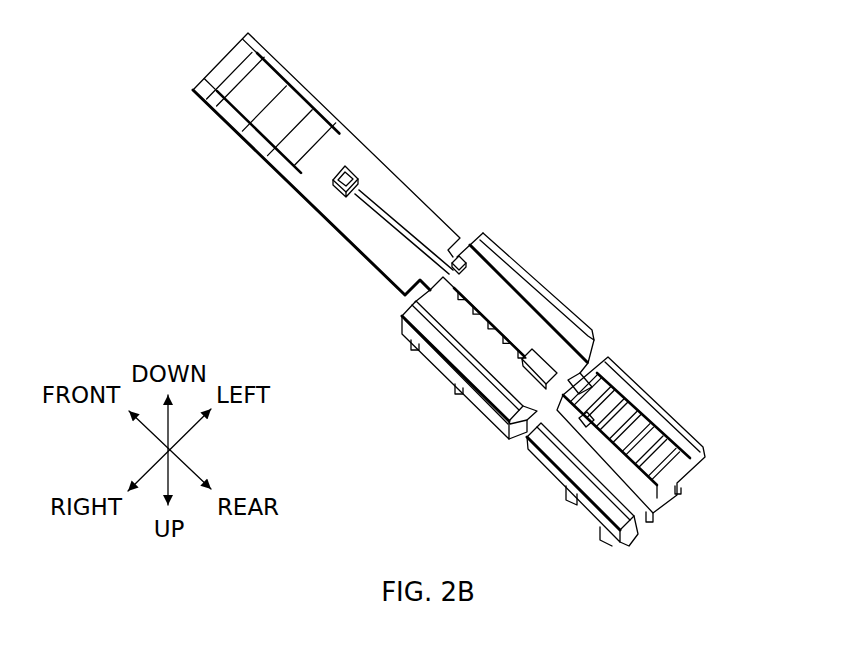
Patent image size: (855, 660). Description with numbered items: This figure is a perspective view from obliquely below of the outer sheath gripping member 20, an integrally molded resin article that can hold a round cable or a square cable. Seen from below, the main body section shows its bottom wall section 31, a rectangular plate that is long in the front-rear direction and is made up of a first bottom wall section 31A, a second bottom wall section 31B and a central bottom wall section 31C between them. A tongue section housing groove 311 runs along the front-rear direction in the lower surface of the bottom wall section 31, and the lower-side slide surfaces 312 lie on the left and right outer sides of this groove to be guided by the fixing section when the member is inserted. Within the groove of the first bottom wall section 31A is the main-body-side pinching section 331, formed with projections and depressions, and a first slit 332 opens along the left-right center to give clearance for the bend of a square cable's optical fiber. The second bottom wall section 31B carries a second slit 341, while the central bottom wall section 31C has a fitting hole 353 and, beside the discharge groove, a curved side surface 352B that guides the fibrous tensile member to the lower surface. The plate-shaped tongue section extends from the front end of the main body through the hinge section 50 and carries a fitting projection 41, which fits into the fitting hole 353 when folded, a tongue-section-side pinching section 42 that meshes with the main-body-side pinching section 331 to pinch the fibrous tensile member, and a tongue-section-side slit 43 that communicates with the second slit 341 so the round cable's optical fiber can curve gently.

The outer sheath gripping member 20 is at (568, 159).
The bottom wall section 31 is at (487, 428).
The first bottom wall section 31A is at (590, 507).
The second bottom wall section 31B is at (424, 351).
The central bottom wall section 31C is at (500, 400).
The tongue section housing groove 311 is at (487, 352).
The lower-side slide surfaces 312 is at (547, 440).
The main-body-side pinching section 331 is at (635, 415).
The first slit 332 is at (660, 485).
The second slit 341 is at (465, 282).
The curved side surface 352B is at (582, 374).
The fitting hole 353 is at (540, 356).
The fitting projection 41 is at (347, 170).
The tongue-section-side pinching section 42 is at (260, 97).
The tongue-section-side slit 43 is at (387, 217).
The hinge section 50 is at (448, 252).